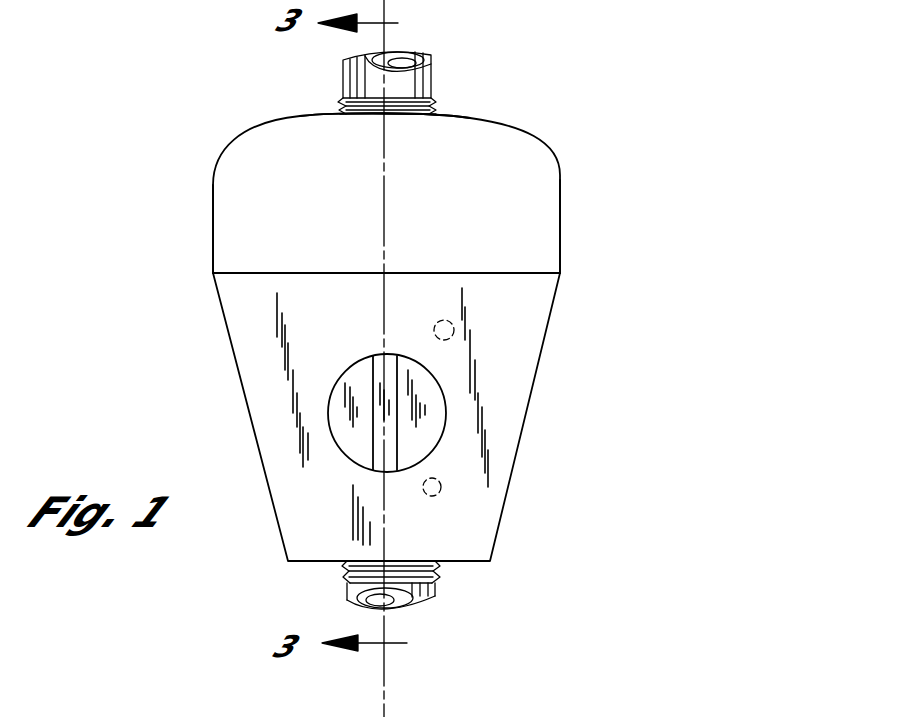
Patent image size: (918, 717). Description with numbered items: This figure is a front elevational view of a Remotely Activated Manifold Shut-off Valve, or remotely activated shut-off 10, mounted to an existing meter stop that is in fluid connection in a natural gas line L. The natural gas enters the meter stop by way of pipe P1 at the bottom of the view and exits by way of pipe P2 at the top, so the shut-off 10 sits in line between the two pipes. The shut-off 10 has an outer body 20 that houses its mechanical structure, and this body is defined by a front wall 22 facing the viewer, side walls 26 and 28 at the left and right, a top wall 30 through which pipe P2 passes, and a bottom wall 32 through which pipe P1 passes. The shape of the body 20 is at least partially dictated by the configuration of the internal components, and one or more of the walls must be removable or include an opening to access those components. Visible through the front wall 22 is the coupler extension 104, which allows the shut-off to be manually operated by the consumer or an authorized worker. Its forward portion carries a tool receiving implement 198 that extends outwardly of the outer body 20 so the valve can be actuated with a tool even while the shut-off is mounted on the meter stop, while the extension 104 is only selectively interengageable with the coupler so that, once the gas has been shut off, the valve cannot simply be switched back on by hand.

The remotely activated shut-off 10 is at (384, 339).
The outer body 20 is at (535, 173).
The front wall 22 is at (538, 212).
The side wall 26 is at (208, 207).
The side wall 28 is at (560, 238).
The top wall 30 is at (447, 115).
The bottom wall 32 is at (472, 563).
The coupler extension 104 is at (428, 397).
The tool receiving implement 198 is at (393, 450).
The pipe P1 is at (436, 590).
The pipe P2 is at (433, 78).
The line L is at (385, 668).